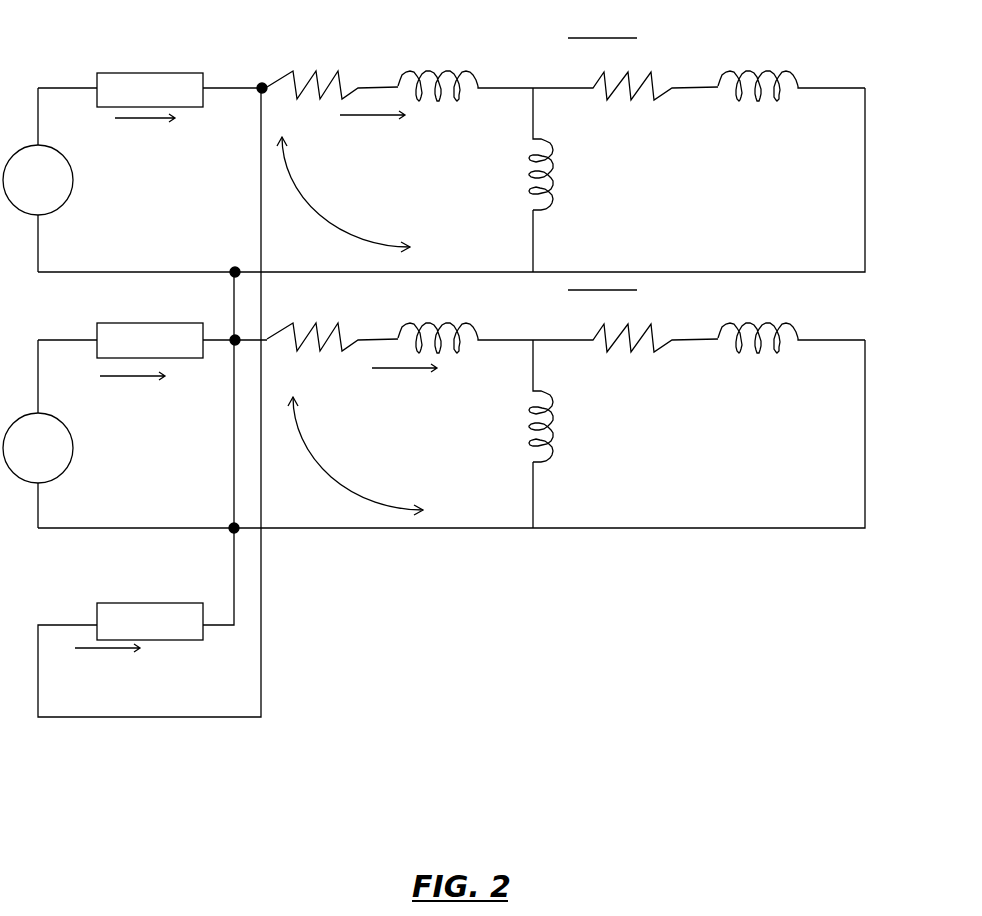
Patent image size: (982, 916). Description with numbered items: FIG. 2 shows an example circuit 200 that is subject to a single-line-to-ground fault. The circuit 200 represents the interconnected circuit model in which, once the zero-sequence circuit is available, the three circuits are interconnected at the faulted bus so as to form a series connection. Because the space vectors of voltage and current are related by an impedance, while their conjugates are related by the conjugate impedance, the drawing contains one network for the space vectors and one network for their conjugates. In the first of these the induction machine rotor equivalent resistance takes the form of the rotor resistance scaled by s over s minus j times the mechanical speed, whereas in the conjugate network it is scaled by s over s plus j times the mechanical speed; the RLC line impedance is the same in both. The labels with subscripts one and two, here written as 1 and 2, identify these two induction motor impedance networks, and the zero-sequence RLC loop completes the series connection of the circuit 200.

The circuit 200 is at (470, 841).
The positive-sequence induction motor impedance network Z_IM1 1 is at (563, 145).
The negative-sequence induction motor impedance network Z_IM2 2 is at (563, 399).